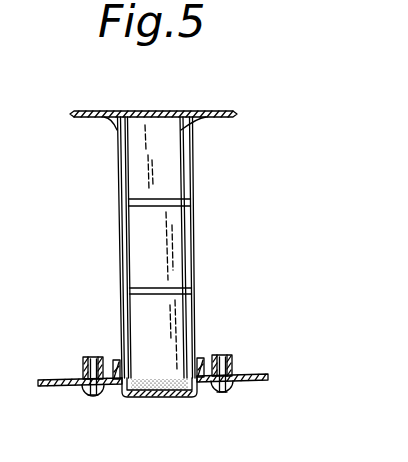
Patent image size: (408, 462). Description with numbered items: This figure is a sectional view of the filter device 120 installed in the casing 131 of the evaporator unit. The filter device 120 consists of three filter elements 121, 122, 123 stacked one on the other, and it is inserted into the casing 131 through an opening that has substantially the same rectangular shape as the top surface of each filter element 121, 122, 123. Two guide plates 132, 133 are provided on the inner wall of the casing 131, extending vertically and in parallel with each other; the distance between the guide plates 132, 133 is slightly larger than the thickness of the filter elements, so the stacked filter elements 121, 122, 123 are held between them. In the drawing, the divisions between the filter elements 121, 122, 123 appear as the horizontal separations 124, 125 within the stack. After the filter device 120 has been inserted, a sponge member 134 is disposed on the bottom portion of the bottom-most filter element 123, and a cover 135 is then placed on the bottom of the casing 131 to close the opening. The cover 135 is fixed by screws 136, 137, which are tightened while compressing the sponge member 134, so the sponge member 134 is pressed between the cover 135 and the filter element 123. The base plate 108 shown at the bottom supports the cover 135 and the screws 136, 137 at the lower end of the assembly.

The base plate 108 is at (127, 398).
The filter device 120 is at (151, 247).
The filter element 121 is at (173, 180).
The filter element 122 is at (174, 233).
The filter element 123 is at (177, 316).
The upper partition 124 is at (123, 200).
The lower partition 125 is at (174, 291).
The casing 131 is at (84, 110).
The guide plate 132 is at (111, 127).
The guide plate 133 is at (193, 128).
The sponge member 134 is at (183, 397).
The cover 135 is at (148, 398).
The screw 136 is at (88, 398).
The screw 137 is at (231, 402).